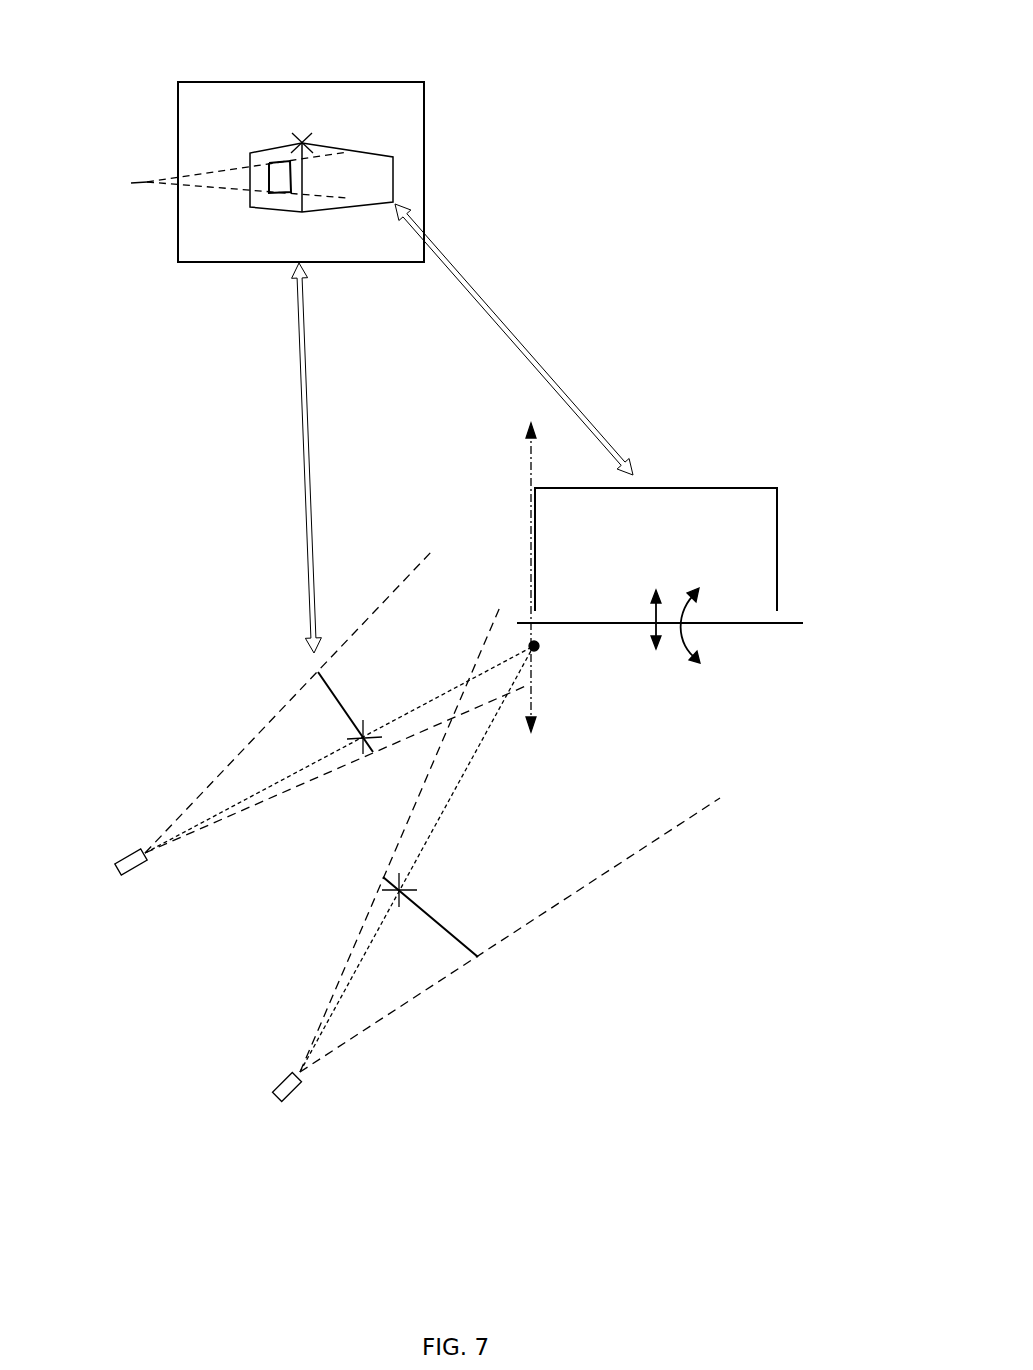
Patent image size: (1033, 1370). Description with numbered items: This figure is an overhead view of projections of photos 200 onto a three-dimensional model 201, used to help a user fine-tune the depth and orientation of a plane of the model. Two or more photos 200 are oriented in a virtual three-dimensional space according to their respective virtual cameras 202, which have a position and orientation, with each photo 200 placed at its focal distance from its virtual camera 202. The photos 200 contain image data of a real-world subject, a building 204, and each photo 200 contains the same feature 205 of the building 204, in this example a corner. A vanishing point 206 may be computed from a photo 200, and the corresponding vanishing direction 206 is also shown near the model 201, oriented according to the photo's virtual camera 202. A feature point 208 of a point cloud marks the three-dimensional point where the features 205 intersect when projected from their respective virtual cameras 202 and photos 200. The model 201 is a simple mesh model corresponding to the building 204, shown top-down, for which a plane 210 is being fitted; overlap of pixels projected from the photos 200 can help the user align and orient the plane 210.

The photo 200 is at (178, 82).
The three-dimensional model 201 is at (777, 508).
The virtual camera 202 is at (137, 852).
The building 204 is at (393, 178).
The feature 205 is at (302, 143).
The vanishing point / vanishing direction 206 is at (131, 183).
The feature point 208 is at (538, 650).
The plane 210 is at (773, 623).